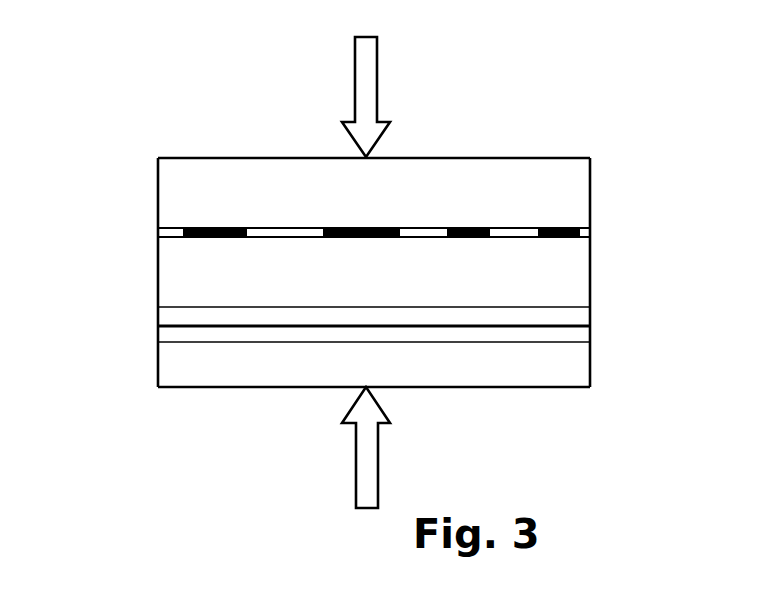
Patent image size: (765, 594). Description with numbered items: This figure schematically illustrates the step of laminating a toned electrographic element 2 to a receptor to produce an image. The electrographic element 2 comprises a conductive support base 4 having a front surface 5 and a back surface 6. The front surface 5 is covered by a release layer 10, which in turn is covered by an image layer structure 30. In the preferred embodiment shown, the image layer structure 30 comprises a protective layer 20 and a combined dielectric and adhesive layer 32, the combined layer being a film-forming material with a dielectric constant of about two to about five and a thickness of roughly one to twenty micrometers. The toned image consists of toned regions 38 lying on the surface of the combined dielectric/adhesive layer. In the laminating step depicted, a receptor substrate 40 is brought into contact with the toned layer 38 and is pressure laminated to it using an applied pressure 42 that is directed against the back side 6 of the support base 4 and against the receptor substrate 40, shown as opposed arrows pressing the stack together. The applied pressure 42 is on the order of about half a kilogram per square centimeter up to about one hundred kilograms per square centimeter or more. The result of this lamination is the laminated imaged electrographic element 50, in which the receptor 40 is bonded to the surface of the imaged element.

The laminated imaged electrographic element 50 is at (604, 159).
The receptor substrate 40 is at (262, 178).
The electrographic element 2 is at (607, 256).
The back surface 6 is at (200, 388).
The toned regions 38 is at (200, 228).
The combined dielectric and adhesive layer 32 is at (560, 255).
The image layer structure 30 is at (265, 284).
The protective layer 20 is at (580, 313).
The front surface 5 is at (187, 325).
The release layer 10 is at (580, 330).
The conductive support base 4 is at (453, 372).
The applied pressure 42 is at (375, 272).